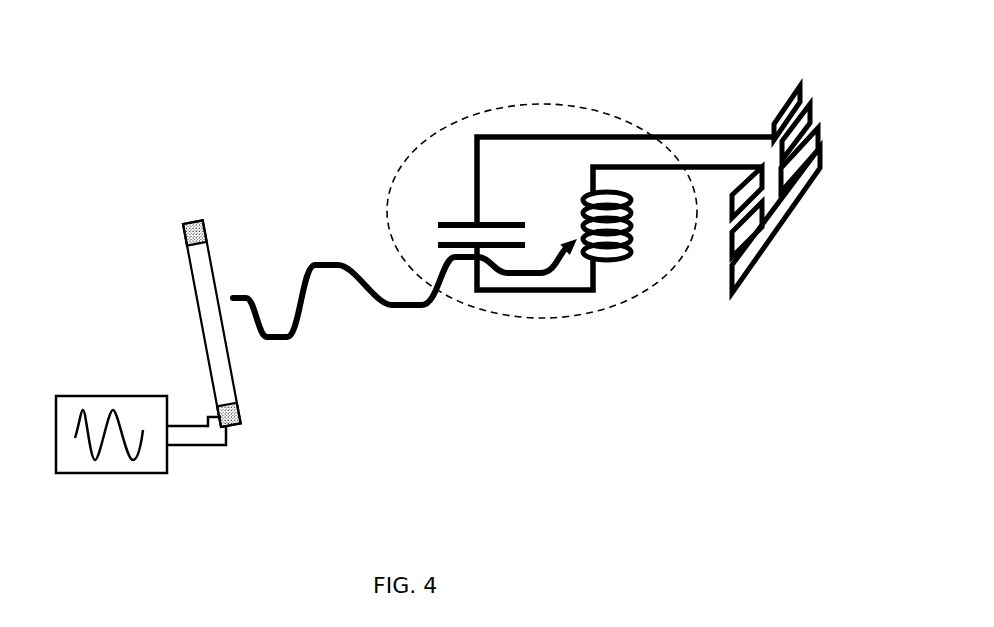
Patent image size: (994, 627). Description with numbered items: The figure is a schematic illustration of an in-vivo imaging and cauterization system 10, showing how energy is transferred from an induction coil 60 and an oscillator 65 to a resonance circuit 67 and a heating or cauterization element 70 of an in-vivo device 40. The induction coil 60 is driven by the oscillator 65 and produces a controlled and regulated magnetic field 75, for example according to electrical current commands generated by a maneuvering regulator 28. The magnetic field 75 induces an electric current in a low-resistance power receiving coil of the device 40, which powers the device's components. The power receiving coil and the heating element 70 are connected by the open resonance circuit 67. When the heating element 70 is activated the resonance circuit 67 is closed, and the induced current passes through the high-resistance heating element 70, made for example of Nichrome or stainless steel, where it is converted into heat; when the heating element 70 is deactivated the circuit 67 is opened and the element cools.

The wireless sensing system 10 is at (290, 135).
The maneuvering regulator 28 is at (228, 475).
The in-vivo device 40 is at (629, 298).
The induction coil 60 is at (158, 305).
The oscillator 65 is at (95, 473).
The resonance circuit 67 is at (472, 150).
The heating element 70 is at (765, 278).
The magnetic field 75 is at (393, 308).